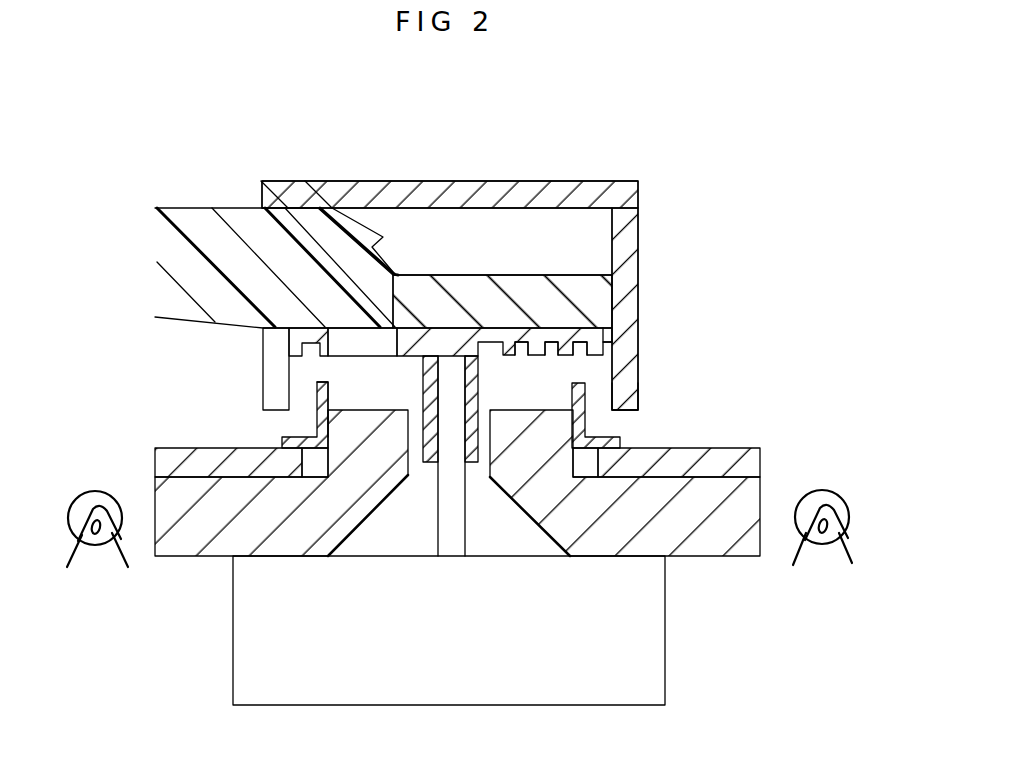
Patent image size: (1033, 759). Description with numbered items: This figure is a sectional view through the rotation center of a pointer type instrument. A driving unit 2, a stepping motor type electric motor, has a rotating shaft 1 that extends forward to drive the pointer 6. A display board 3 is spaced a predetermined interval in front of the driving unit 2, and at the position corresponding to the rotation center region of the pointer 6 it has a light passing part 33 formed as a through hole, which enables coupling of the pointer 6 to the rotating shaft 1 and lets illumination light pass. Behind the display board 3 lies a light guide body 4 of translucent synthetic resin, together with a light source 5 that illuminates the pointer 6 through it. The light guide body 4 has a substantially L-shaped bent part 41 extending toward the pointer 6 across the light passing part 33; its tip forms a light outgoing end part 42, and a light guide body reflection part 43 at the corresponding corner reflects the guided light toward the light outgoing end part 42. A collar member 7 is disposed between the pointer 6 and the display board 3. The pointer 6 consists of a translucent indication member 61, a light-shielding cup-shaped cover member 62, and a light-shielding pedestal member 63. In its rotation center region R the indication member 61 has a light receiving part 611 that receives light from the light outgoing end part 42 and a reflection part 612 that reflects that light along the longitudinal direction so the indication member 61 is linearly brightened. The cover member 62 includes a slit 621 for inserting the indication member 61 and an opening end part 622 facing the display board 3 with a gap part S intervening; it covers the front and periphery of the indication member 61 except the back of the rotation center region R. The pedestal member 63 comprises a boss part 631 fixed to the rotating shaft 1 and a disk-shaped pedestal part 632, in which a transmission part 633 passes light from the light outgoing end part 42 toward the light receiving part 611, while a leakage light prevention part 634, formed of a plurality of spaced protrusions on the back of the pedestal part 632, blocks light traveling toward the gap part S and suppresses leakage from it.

The rotating shaft 1 is at (450, 391).
The driving unit 2 is at (662, 638).
The display board 3 is at (190, 453).
The light guide body 4 is at (453, 514).
The light source 5 is at (90, 495).
The pointer 6 is at (526, 156).
The collar member 7 is at (329, 394).
The light passing part 33 is at (314, 463).
The bent part 41 is at (300, 437).
The light outgoing end part 42 is at (374, 402).
The light guide body reflection part 43 is at (358, 532).
The indication member 61 is at (200, 227).
The light receiving part 611 is at (322, 266).
The reflection part 612 is at (378, 228).
The cover member 62 is at (501, 296).
The pedestal member 63 is at (445, 328).
The slit 621 is at (272, 353).
The opening end part 622 is at (641, 412).
The boss part 631 is at (478, 466).
The pedestal part 632 is at (616, 324).
The transmission part 633 is at (379, 346).
The leakage light prevention part 634 is at (579, 342).
The rotation center region R is at (513, 240).
The gap part S is at (626, 425).